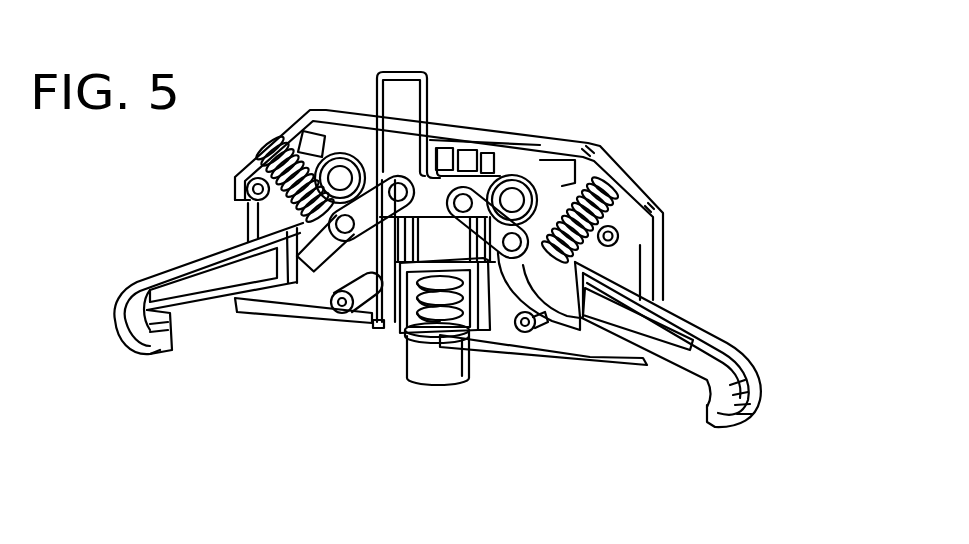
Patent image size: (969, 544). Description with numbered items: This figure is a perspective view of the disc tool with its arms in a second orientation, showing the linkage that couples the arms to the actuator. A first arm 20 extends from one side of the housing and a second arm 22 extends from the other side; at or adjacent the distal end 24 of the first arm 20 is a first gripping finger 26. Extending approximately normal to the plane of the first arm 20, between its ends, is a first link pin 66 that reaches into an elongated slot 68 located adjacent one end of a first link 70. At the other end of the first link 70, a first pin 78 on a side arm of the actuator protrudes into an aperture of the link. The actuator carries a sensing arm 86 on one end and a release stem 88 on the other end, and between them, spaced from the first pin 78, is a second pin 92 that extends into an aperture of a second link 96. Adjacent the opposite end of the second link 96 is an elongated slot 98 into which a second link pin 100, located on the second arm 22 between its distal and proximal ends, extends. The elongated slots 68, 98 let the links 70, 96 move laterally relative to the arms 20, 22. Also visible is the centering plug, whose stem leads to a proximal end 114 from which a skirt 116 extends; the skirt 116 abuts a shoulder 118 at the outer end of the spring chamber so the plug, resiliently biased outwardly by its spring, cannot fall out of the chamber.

The first arm 20 is at (710, 327).
The second arm 22 is at (172, 265).
The distal end 24 is at (710, 402).
The first gripping finger 26 is at (170, 352).
The first link pin 66 is at (512, 198).
The elongated slot 68 is at (523, 270).
The first link 70 is at (485, 218).
The first pin 78 is at (463, 200).
The sensing arm 86 is at (379, 324).
The release stem 88 is at (408, 83).
The second pin 92 is at (403, 175).
The second link 96 is at (395, 183).
The elongated slot 98 is at (313, 228).
The second link pin 100 is at (345, 221).
The proximal end 114 is at (407, 343).
The skirt 116 is at (407, 336).
The shoulder 118 is at (465, 374).